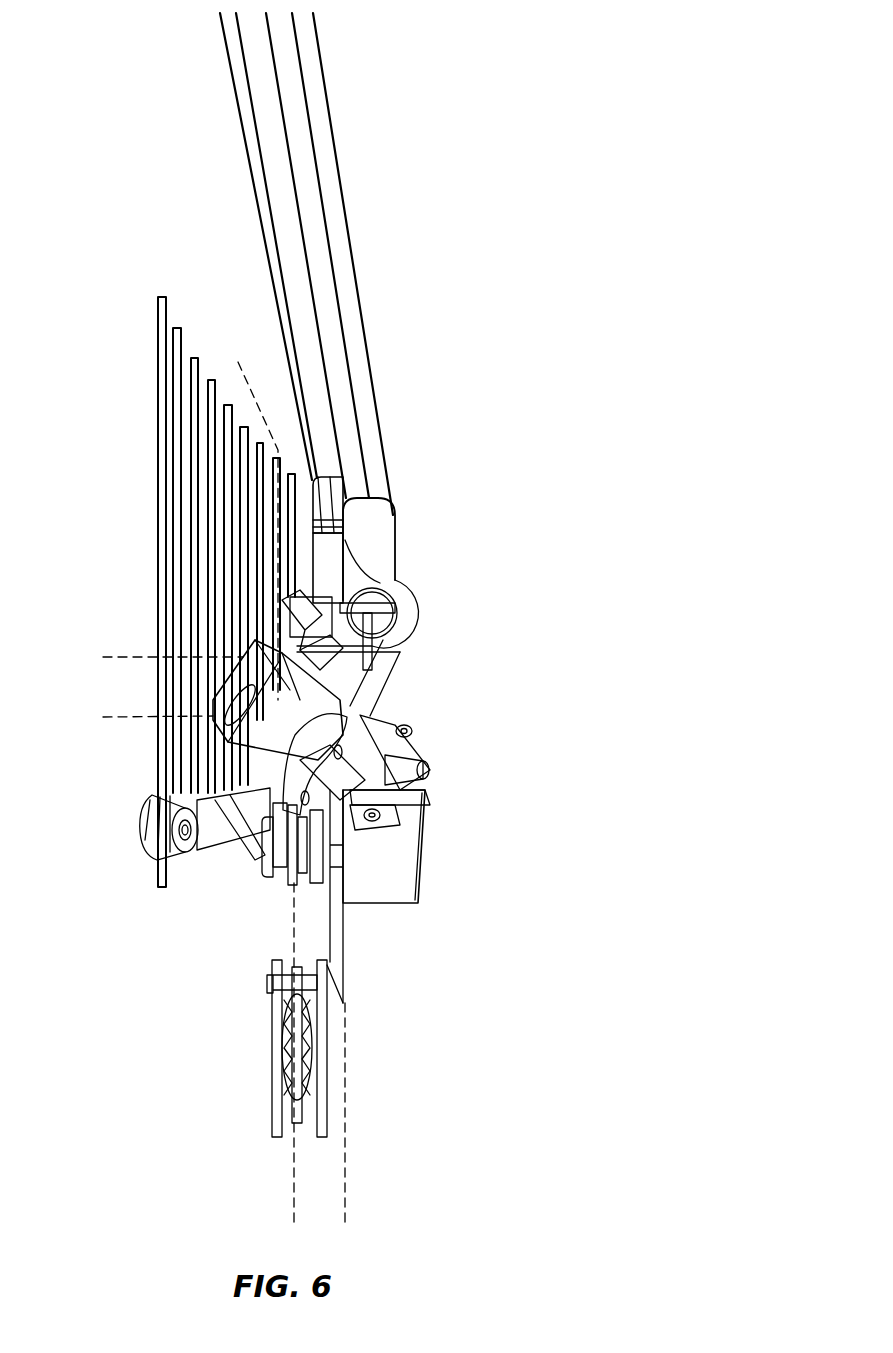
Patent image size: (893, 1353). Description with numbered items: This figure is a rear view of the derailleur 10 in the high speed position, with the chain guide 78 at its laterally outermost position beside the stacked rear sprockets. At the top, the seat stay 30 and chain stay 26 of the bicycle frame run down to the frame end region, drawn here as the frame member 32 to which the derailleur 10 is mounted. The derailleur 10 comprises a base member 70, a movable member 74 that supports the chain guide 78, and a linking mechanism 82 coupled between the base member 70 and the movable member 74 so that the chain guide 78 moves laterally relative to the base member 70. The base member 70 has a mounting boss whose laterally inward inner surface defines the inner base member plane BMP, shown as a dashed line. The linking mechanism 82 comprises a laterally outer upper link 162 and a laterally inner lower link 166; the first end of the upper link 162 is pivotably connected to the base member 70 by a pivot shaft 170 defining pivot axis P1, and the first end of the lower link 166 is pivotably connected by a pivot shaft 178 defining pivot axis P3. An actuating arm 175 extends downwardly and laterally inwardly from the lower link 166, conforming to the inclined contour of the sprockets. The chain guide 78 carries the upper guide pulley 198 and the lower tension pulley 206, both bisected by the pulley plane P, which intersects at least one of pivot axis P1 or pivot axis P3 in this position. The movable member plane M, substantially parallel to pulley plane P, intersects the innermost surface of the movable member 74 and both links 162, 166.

The derailleur 10 is at (472, 962).
The chain stay 26 is at (365, 683).
The seat stay 30 is at (345, 277).
The frame bracket 32 is at (363, 562).
The base member 70 is at (400, 655).
The movable member 74 is at (447, 869).
The chain guide 78 is at (215, 958).
The linking mechanism 82 is at (402, 717).
The upper link 162 is at (377, 703).
The lower link 166 is at (365, 828).
The pivot shaft 170 is at (403, 777).
The actuating arm 175 is at (147, 827).
The pivot shaft 178 is at (393, 817).
The guide pulley 198 is at (292, 880).
The tension pulley 206 is at (293, 1120).
The inner base member plane BMP is at (245, 519).
The pivot axis P1 is at (154, 659).
The pivot axis P3 is at (139, 719).
The pulley plane P is at (295, 1183).
The movable member plane M is at (345, 1188).